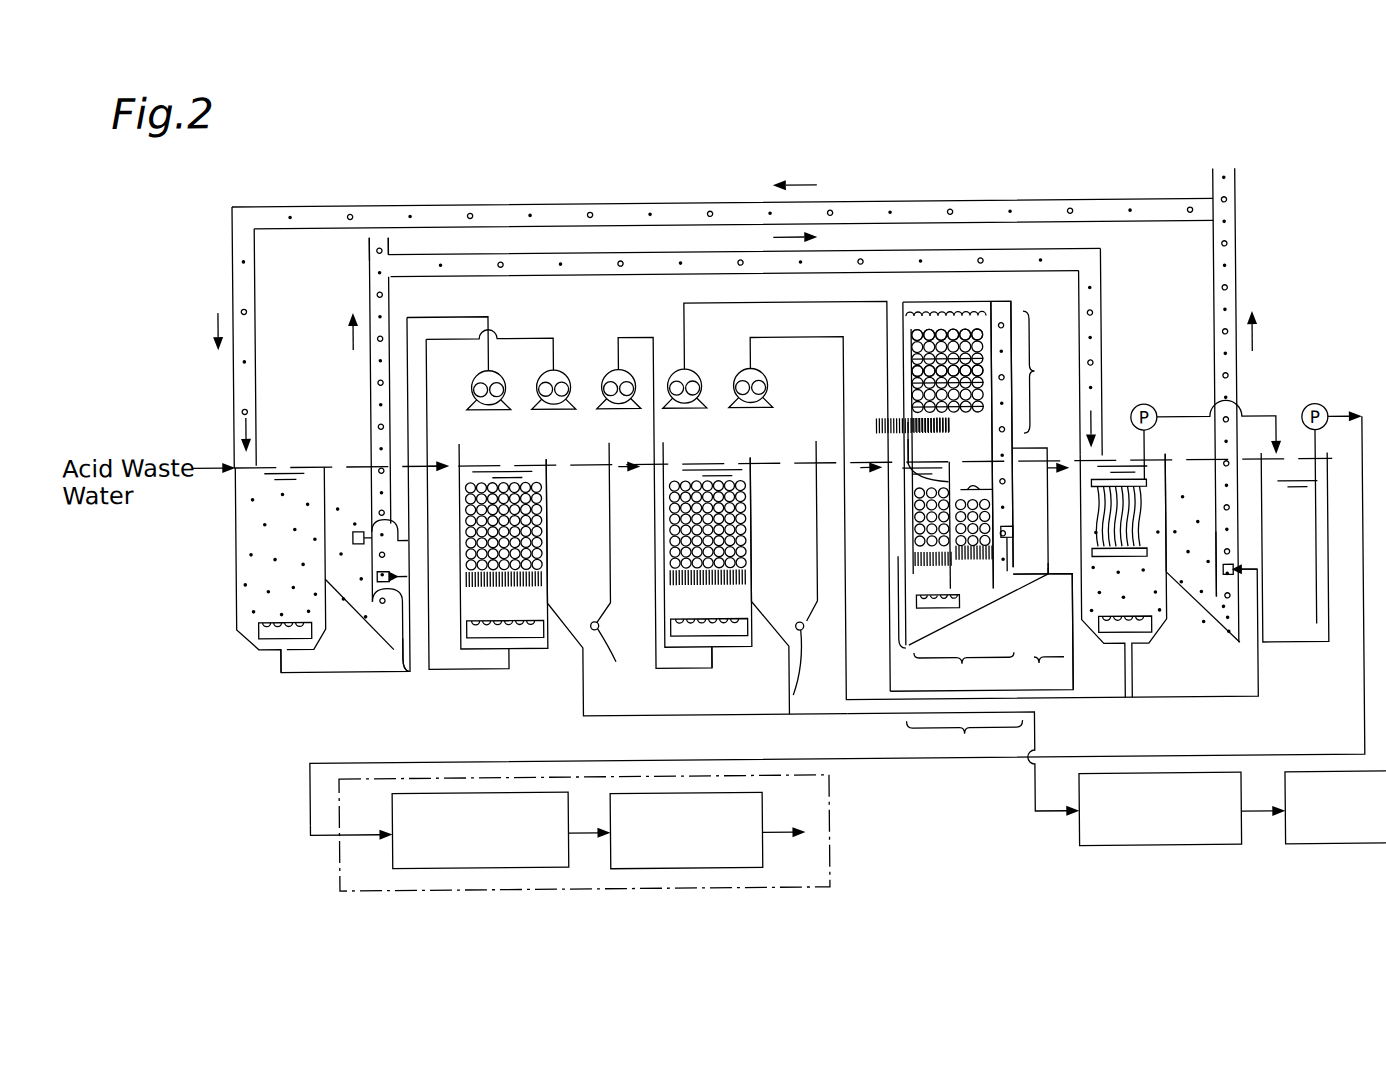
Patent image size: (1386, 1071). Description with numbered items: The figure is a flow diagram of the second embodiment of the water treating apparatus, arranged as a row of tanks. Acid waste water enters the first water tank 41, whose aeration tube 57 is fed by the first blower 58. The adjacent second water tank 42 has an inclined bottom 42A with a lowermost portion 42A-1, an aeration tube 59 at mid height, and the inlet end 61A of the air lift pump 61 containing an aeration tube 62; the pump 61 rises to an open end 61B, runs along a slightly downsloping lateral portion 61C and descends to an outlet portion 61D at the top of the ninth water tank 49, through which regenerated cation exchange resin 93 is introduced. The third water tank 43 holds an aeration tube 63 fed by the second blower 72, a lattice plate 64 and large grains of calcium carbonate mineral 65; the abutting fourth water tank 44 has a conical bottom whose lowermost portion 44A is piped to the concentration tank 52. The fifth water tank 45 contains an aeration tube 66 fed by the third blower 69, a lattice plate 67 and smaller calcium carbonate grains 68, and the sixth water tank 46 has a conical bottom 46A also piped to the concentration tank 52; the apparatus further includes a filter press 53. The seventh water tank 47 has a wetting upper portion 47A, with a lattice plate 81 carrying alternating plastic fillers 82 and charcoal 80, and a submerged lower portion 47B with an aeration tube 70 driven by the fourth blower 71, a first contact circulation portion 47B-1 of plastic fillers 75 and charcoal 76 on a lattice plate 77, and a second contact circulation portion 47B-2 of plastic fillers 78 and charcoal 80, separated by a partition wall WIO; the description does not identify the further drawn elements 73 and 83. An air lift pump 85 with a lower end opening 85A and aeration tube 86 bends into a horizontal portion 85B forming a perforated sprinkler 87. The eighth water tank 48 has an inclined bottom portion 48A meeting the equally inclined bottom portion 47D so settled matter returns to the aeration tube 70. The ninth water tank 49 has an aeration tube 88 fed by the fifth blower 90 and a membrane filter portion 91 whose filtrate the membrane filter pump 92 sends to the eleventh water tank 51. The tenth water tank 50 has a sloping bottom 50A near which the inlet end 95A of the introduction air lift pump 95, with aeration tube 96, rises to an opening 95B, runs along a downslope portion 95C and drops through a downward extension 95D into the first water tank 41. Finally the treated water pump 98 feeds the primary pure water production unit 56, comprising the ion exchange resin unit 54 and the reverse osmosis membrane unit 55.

The first water tank 41 is at (222, 600).
The second water tank 42 is at (385, 627).
The inclined bottom 42A is at (378, 642).
The lowermost portion of inclined bottom 42A-1 is at (399, 655).
The third water tank 43 is at (527, 570).
The fourth water tank 44 is at (695, 579).
The lowermost portion of fourth water tank 44A is at (624, 655).
The fifth water tank 45 is at (735, 565).
The sixth water tank 46 is at (794, 578).
The bottom of sixth water tank 46A is at (811, 626).
The seventh water tank 47 is at (947, 543).
The wetting upper portion 47A is at (980, 445).
The submerged lower portion 47B is at (895, 566).
The first contact circulation portion 47B-1 is at (900, 719).
The second contact circulation portion 47B-2 is at (965, 672).
The bottom portion of seventh water tank 47D is at (972, 618).
The eighth water tank 48 is at (1043, 632).
The bottom portion of eighth water tank 48A is at (1016, 600).
The ninth water tank 49 is at (1118, 582).
The tenth water tank 50 is at (1234, 576).
The bottom of tenth water tank 50A is at (1216, 622).
The eleventh water tank 51 is at (1297, 668).
The concentration tank 52 is at (1160, 853).
The filter press 53 is at (1341, 853).
The ion exchange resin unit 54 is at (387, 852).
The reverse osmosis membrane unit 55 is at (757, 856).
The primary pure water production unit 56 is at (711, 837).
The aeration tube 57 is at (268, 641).
The first blower 58 is at (473, 381).
The aeration tube 59 is at (355, 533).
The air lift pump 61 is at (356, 298).
The inlet end 61A is at (401, 665).
The open end 61B is at (369, 258).
The lateral portion 61C is at (585, 256).
The outlet portion 61D is at (1100, 366).
The aeration tube 62 is at (386, 573).
The aeration tube 63 is at (512, 641).
The lattice plate 64 is at (540, 582).
The grains of calcium carbonate mineral 65 is at (499, 490).
The aeration tube 66 is at (731, 641).
The lattice plate 67 is at (744, 582).
The grains of calcium carbonate mineral 68 is at (705, 490).
The third blower 69 is at (608, 379).
The aeration tube 70 is at (905, 628).
The fourth blower 71 is at (694, 374).
The second blower 72 is at (540, 380).
The support grid 73 is at (928, 572).
The plastic fillers 75 is at (910, 516).
The charcoal 76 is at (927, 464).
The lattice plate 77 is at (975, 563).
The plastic fillers 78 is at (992, 522).
The charcoal 80 is at (990, 500).
The lattice plate 81 is at (968, 438).
The plastic fillers 82 is at (910, 394).
The carrier packing 83 is at (910, 372).
The air lift pump 85 is at (1025, 455).
The lower end opening 85A is at (1046, 580).
The horizontally extending portion 85B is at (978, 314).
The aeration tube 86 is at (1010, 540).
The sprinkler 87 is at (918, 316).
The aeration tube 88 is at (1133, 641).
The fifth blower 90 is at (767, 377).
The membrane filter portion 91 is at (1124, 487).
The membrane filter pump 92 is at (1152, 413).
The regenerated cation exchange resin 93 is at (1078, 207).
The introduction air lift pump 95 is at (746, 388).
The inlet end 95A is at (1212, 531).
The opening 95B is at (1213, 182).
The downslope portion 95C is at (455, 190).
The downward extension 95D is at (232, 288).
The aeration tube 96 is at (1226, 572).
The treated water pump 98 is at (1306, 412).
The partition wall WIO is at (906, 445).